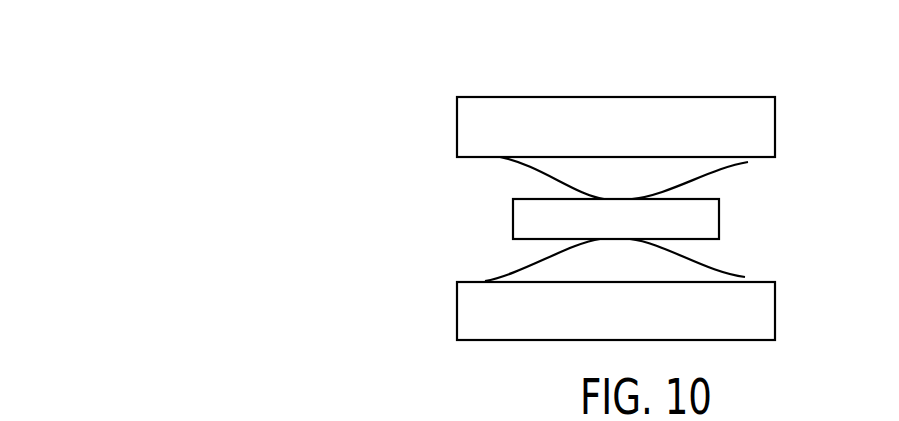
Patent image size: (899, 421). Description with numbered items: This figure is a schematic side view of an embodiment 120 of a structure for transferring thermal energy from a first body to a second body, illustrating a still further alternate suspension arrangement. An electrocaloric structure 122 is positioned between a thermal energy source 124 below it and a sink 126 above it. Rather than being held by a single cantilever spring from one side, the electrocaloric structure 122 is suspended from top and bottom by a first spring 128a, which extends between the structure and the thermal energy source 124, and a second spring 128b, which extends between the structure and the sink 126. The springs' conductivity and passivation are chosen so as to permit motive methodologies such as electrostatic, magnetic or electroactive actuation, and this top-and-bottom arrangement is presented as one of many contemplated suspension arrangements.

The embodiment 120 is at (414, 119).
The electrocaloric structure 122 is at (720, 220).
The thermal energy source 124 is at (777, 309).
The sink 126 is at (777, 131).
The first spring 128a is at (527, 270).
The second spring 128b is at (530, 167).